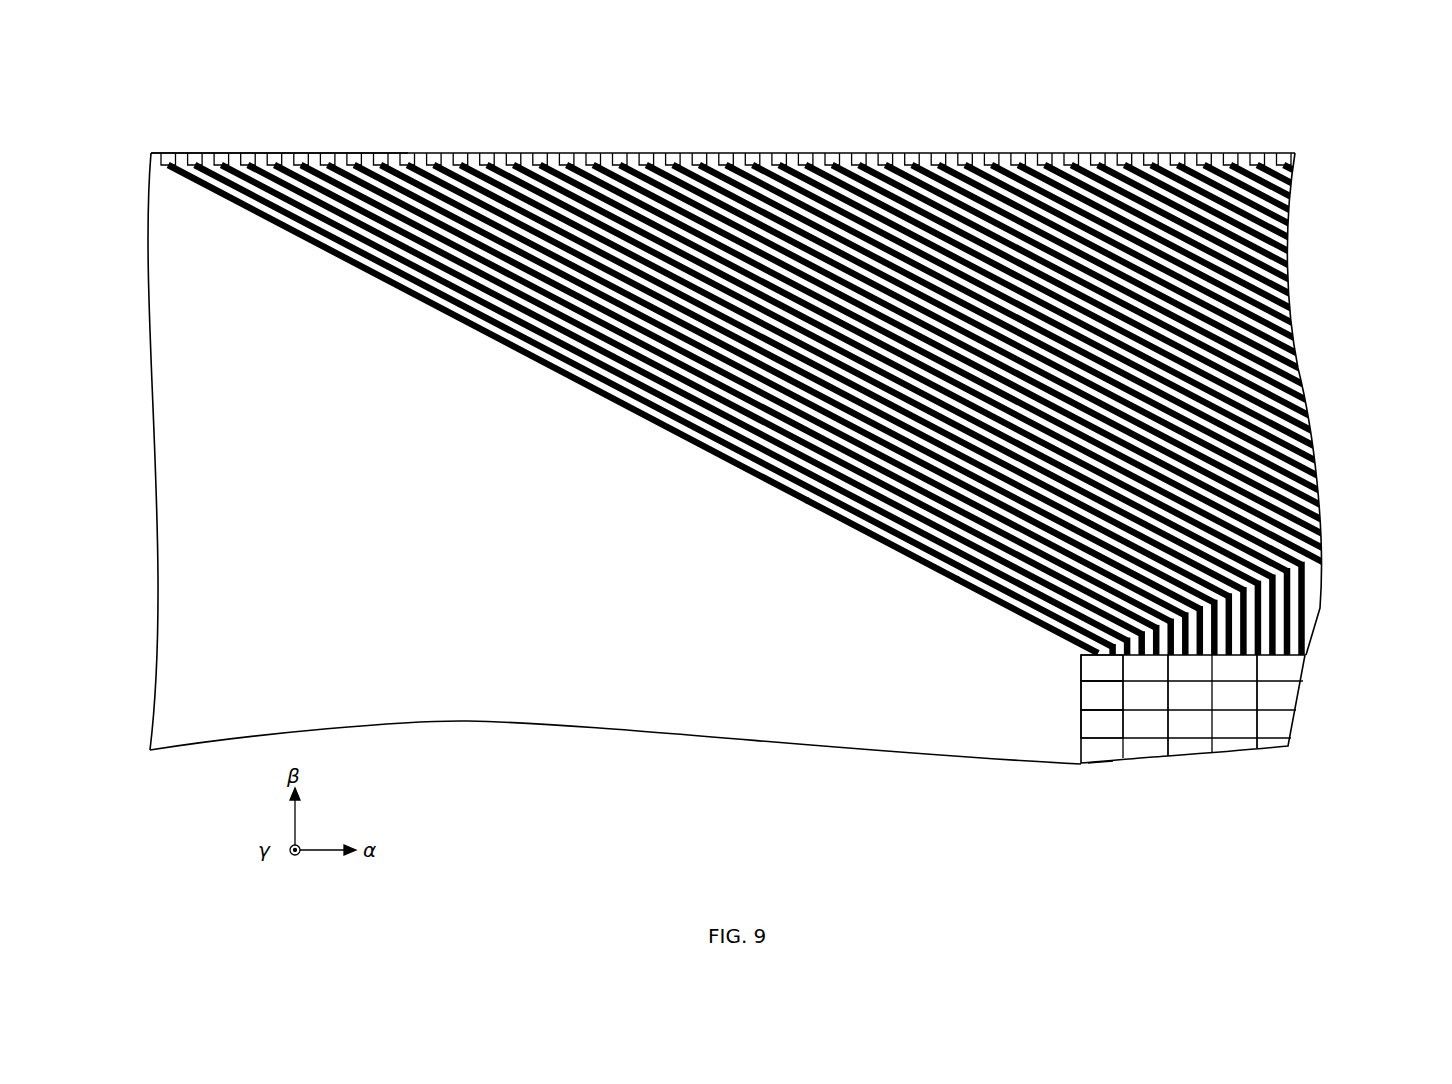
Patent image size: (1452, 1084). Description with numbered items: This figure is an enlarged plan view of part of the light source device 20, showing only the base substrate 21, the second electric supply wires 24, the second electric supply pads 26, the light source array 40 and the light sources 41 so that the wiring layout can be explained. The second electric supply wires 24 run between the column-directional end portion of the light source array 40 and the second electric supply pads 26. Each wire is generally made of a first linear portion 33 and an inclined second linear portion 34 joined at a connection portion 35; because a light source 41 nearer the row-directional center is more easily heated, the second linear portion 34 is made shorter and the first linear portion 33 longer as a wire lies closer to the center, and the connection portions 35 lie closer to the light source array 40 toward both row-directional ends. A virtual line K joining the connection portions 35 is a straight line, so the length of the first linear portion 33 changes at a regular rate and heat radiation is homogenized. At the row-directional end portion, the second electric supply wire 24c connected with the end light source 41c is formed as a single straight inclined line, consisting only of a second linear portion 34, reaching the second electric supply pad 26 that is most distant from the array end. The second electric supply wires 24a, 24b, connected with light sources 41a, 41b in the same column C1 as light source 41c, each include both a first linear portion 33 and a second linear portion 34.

The light source device 20 is at (1280, 140).
The base substrate 21 is at (1242, 143).
The second electric supply pad 26 is at (161, 143).
The second electric supply wire 24 is at (804, 494).
The second electric supply wire 24a is at (1000, 612).
The second electric supply wire 24b is at (895, 540).
The second electric supply wire 24c is at (630, 413).
The second linear portion 34 is at (779, 494).
The first linear portion 33 is at (1252, 608).
The light source array 40 is at (1234, 718).
The light source 41 is at (1275, 716).
The light source 41a is at (1080, 657).
The light source 41b is at (1105, 683).
The light source 41c is at (1105, 722).
The virtual line K is at (1203, 590).
The connection portion 35 is at (1260, 557).
The column C1 is at (1092, 760).